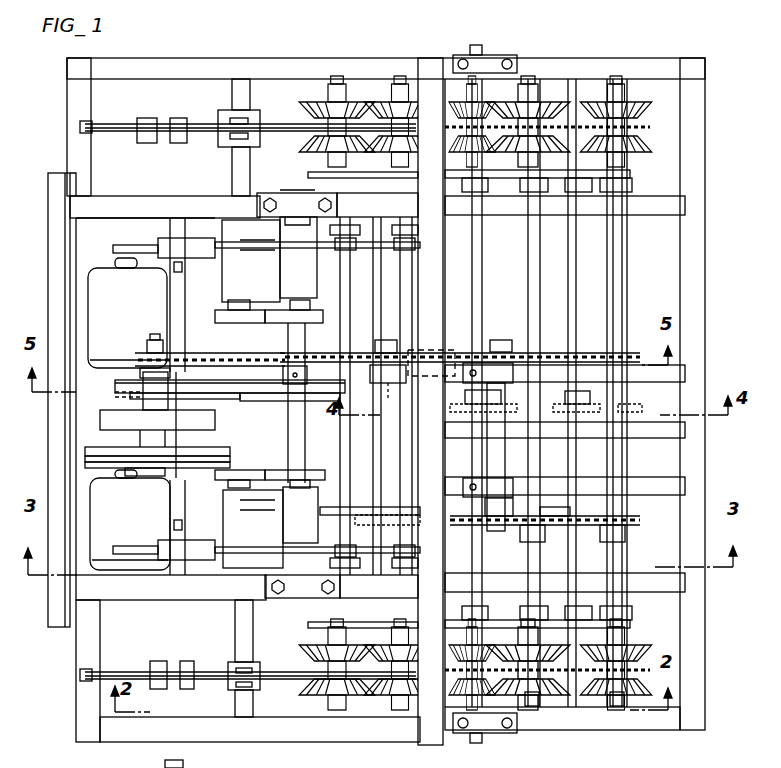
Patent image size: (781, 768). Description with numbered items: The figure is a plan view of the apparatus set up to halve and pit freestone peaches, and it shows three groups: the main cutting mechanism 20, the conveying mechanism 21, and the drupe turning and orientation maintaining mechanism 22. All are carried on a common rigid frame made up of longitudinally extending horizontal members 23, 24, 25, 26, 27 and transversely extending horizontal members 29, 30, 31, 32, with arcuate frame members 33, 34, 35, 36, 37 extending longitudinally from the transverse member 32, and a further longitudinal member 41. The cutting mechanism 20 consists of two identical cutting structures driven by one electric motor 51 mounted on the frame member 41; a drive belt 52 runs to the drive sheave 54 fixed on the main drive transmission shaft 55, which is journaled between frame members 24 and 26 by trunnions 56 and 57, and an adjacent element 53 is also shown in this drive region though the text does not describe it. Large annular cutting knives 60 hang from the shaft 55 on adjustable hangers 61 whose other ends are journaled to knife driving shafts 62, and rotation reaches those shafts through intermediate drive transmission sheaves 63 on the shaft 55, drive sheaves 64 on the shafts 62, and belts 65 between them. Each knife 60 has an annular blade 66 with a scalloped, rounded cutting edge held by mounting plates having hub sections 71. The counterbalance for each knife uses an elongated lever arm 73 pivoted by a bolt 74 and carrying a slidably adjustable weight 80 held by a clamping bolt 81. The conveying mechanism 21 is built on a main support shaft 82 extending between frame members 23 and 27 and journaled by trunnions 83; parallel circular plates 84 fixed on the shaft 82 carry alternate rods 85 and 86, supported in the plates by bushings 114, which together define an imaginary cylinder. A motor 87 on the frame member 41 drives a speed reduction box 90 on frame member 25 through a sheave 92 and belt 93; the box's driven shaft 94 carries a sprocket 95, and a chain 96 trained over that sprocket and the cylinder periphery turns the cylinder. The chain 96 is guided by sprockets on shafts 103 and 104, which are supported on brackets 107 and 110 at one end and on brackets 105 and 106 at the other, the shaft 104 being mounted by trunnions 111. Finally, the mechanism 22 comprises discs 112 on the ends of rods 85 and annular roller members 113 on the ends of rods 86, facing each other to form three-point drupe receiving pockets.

The main cutting mechanism 20 is at (85, 238).
The conveying mechanism 21 is at (630, 280).
The drupe turning and orientation maintaining mechanism 22 is at (665, 104).
The longitudinally extending horizontal frame member 23 is at (158, 60).
The longitudinally extending horizontal frame member 24 is at (118, 203).
The longitudinally extending horizontal frame member 25 is at (80, 419).
The longitudinally extending horizontal frame member 26 is at (155, 603).
The longitudinally extending horizontal frame member 27 is at (140, 730).
The transversely extending horizontal frame member 29 is at (58, 596).
The transversely extending horizontal frame member 30 is at (70, 90).
The transversely extending horizontal frame member 31 is at (432, 64).
The transversely extending horizontal frame member 32 is at (700, 470).
The arcuate frame member 33 is at (648, 210).
The arcuate frame member 34 is at (690, 360).
The arcuate frame member 35 is at (645, 437).
The arcuate frame member 36 is at (650, 487).
The arcuate frame member 37 is at (638, 575).
The longitudinal frame member 41 is at (180, 492).
The electric motor 51 is at (102, 280).
The drive belt 52 is at (222, 393).
The slide block 53 is at (110, 404).
The drive sheave 54 is at (283, 395).
The main drive transmission shaft 55 is at (300, 450).
The trunnion 56 is at (263, 193).
The trunnion 57 is at (280, 598).
The annular cutting knife 60 is at (138, 108).
The adjustable hanger 61 is at (232, 265).
The knife driving shaft 62 is at (233, 176).
The intermediate drive transmission sheave 63 is at (320, 305).
The drive sheave 64 is at (228, 323).
The belt 65 is at (275, 323).
The annular blade 66 is at (112, 135).
The hub section 71 is at (220, 115).
The lever arm 73 is at (132, 250).
The bolt 74 is at (385, 262).
The adjustable weight 80 is at (177, 250).
The clamping bolt 81 is at (170, 278).
The main support shaft 82 is at (475, 50).
The trunnion 83 is at (505, 60).
The circular plate 84 is at (630, 172).
The rod 85 is at (568, 236).
The rod 86 is at (526, 232).
The motor 87 is at (130, 520).
The speed reduction box 90 is at (92, 430).
The sheave 92 is at (85, 450).
The belt 93 is at (85, 460).
The driven shaft 94 is at (152, 345).
The sprocket 95 is at (138, 356).
The chain 96 is at (308, 362).
The shaft 103 is at (378, 352).
The shaft 104 is at (492, 340).
The bracket 105 is at (372, 395).
The bracket 106 is at (452, 360).
The bracket 107 is at (388, 505).
The bracket 110 is at (453, 480).
The trunnion 111 is at (520, 352).
The disc 112 is at (580, 705).
The annular roller member 113 is at (645, 695).
The bushing 114 is at (470, 192).